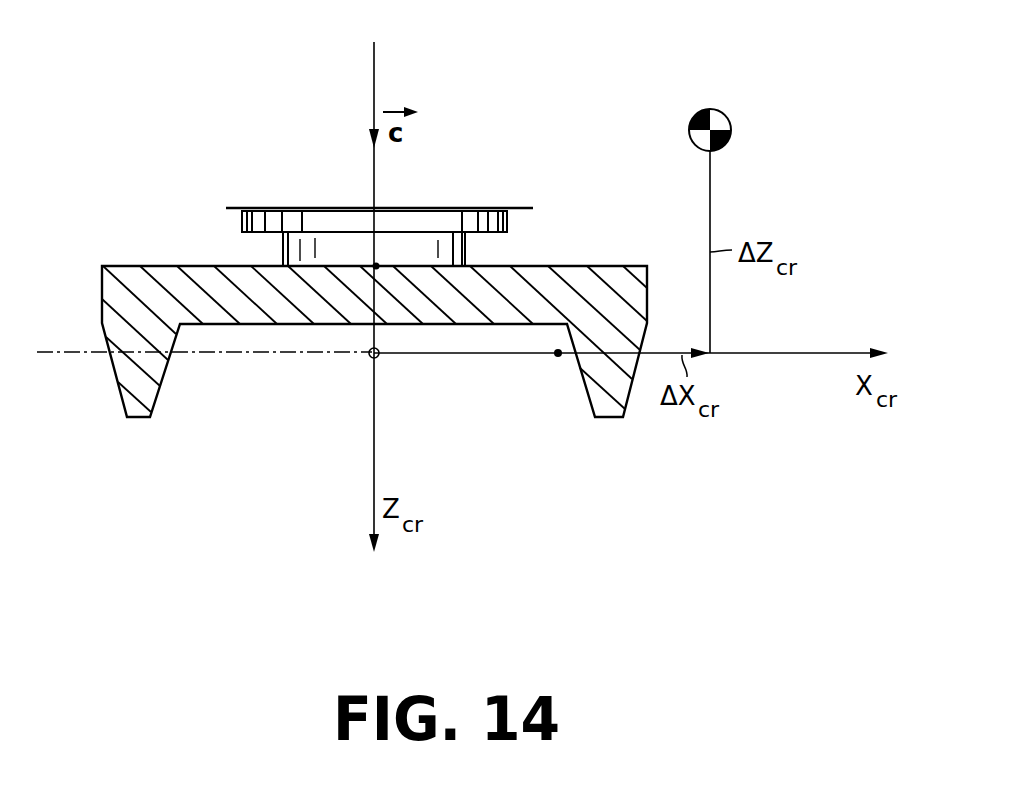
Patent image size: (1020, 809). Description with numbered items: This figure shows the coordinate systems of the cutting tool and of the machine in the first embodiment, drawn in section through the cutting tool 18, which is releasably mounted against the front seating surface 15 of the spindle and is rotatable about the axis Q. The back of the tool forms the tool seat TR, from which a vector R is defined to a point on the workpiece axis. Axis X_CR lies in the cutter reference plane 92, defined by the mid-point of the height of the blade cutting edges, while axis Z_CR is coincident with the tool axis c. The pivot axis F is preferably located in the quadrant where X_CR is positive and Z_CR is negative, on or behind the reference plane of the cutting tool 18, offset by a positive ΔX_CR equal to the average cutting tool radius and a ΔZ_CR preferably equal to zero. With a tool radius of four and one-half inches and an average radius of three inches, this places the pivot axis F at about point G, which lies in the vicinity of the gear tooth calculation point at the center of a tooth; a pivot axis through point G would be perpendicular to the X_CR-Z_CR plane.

The seating surface 15 is at (257, 240).
The cutting tool 18 is at (137, 280).
The cutter reference plane 92 is at (72, 353).
The tool seat TR is at (377, 265).
The axis Q is at (374, 376).
The point G is at (558, 356).
The pivot axis F is at (727, 117).